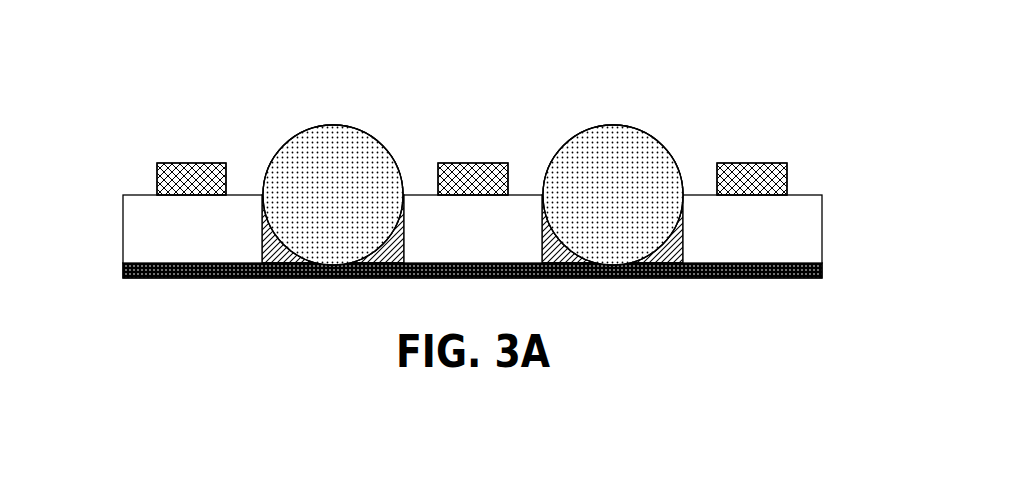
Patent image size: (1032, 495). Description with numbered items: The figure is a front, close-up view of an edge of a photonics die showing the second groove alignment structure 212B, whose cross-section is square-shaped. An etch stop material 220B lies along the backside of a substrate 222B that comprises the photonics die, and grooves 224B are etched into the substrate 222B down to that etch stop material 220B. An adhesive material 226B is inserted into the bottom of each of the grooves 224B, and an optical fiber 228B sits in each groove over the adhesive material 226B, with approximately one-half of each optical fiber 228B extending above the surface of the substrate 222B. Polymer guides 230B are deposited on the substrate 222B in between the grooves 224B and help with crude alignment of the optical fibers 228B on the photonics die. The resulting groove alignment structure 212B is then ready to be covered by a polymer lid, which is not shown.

The second groove alignment structure 212B is at (487, 38).
The etch stop material 220B is at (822, 271).
The substrate 222B is at (120, 246).
The grooves 224B is at (245, 183).
The adhesive material 226B is at (685, 243).
The optical fiber 228B is at (630, 130).
The polymer guides 230B is at (752, 163).